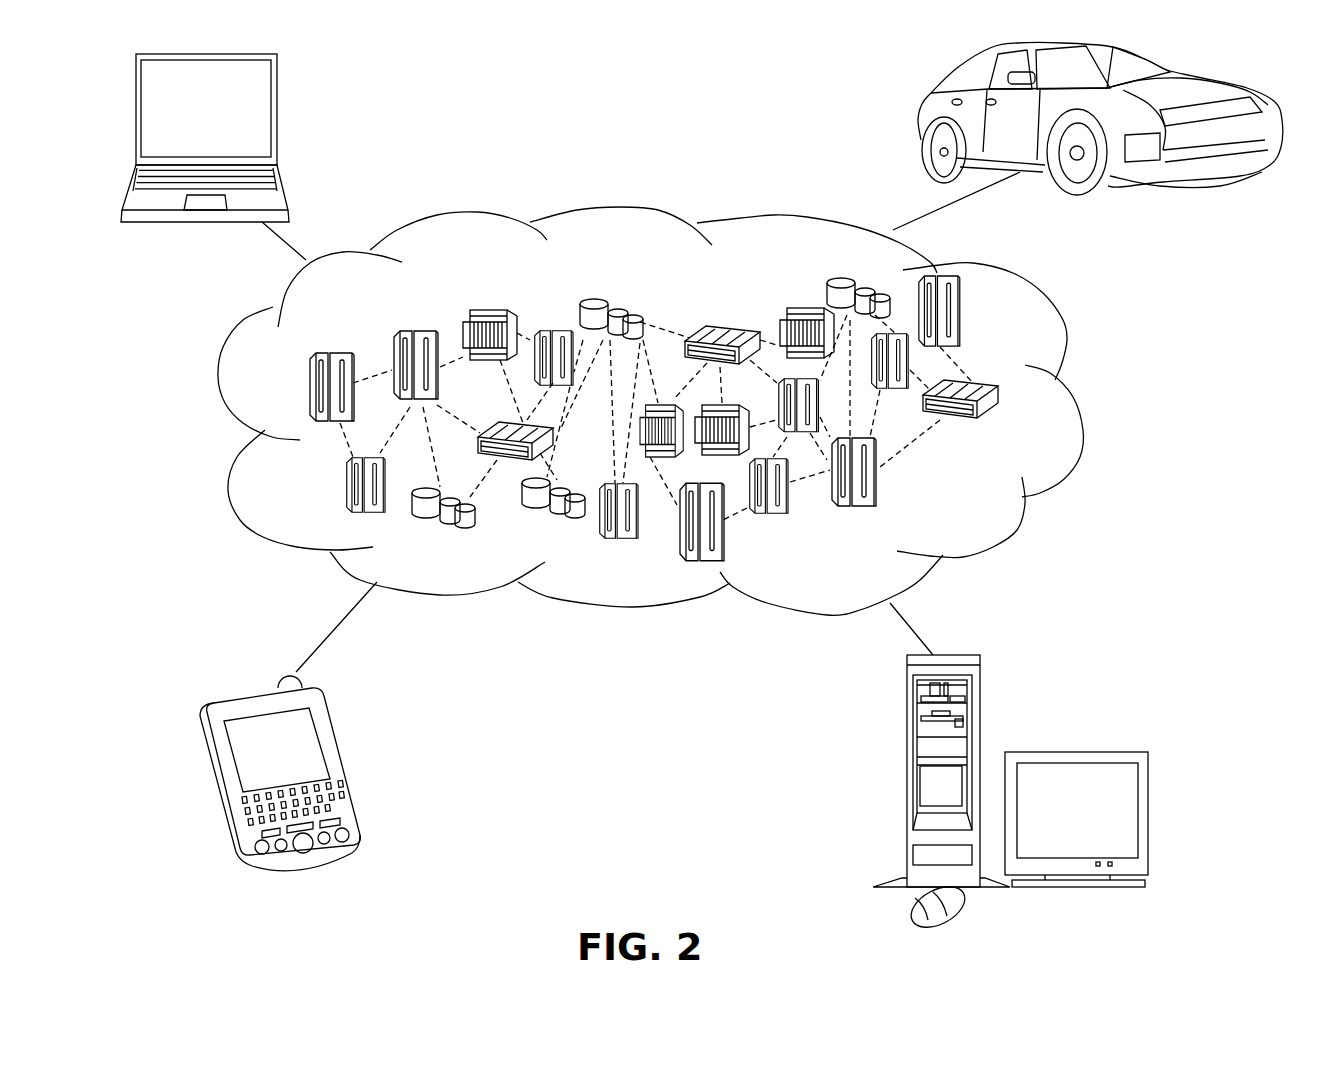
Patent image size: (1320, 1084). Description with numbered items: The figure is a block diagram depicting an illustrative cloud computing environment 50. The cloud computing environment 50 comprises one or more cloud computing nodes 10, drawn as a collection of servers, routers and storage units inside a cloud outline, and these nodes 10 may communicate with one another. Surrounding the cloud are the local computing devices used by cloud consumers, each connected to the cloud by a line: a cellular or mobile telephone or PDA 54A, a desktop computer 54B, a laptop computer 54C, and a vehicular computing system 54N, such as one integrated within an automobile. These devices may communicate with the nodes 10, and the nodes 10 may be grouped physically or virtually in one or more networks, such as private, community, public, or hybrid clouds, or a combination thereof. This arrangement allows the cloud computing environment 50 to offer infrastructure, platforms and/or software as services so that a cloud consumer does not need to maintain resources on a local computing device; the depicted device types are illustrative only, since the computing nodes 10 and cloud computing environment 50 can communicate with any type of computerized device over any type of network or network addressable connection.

The cloud computing nodes 10 is at (983, 507).
The cloud computing environment 50 is at (1073, 400).
The cellular telephone or PDA 54A is at (332, 730).
The desktop computer 54B is at (905, 716).
The laptop computer 54C is at (277, 92).
The vehicular computing system 54N is at (921, 113).